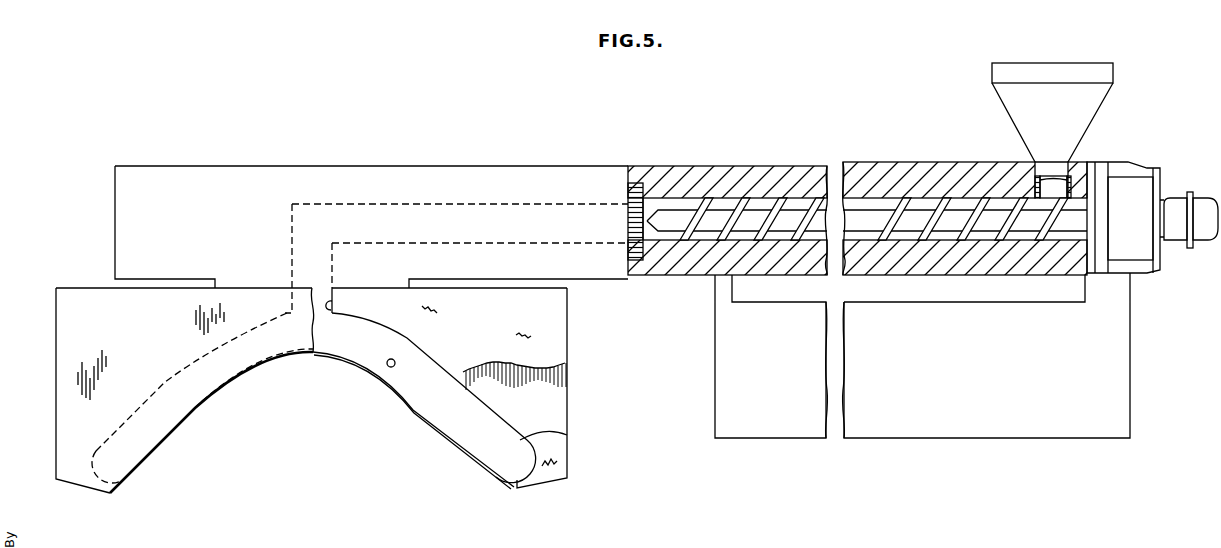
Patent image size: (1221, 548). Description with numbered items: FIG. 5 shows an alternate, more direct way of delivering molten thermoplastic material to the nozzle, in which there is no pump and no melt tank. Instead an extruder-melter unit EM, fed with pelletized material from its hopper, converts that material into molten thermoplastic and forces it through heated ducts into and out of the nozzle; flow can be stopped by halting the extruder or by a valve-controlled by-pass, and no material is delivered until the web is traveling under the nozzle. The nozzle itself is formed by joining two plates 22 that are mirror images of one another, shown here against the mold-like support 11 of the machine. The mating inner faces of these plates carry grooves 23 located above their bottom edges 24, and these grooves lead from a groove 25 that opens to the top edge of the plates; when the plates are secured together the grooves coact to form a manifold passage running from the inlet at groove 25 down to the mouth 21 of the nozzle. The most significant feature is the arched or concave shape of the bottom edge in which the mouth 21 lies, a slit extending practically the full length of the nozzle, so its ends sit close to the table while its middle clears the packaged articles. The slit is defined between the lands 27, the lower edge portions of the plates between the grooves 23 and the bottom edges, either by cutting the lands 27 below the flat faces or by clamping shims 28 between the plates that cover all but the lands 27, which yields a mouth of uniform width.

The mold frame 11 is at (105, 308).
The mouth of the nozzle 21 is at (332, 355).
The plates 22 is at (78, 445).
The grooves 23 is at (390, 368).
The bottom edges 24 is at (438, 418).
The groove 25 is at (333, 305).
The lands 27 is at (468, 448).
The shims 28 is at (547, 323).
The extruder-melter unit EM is at (908, 162).